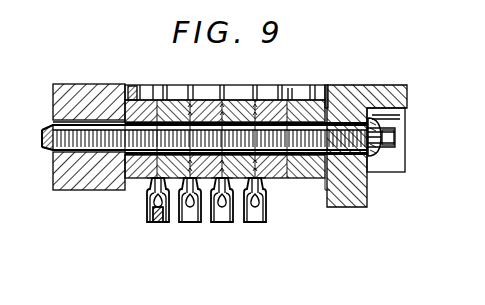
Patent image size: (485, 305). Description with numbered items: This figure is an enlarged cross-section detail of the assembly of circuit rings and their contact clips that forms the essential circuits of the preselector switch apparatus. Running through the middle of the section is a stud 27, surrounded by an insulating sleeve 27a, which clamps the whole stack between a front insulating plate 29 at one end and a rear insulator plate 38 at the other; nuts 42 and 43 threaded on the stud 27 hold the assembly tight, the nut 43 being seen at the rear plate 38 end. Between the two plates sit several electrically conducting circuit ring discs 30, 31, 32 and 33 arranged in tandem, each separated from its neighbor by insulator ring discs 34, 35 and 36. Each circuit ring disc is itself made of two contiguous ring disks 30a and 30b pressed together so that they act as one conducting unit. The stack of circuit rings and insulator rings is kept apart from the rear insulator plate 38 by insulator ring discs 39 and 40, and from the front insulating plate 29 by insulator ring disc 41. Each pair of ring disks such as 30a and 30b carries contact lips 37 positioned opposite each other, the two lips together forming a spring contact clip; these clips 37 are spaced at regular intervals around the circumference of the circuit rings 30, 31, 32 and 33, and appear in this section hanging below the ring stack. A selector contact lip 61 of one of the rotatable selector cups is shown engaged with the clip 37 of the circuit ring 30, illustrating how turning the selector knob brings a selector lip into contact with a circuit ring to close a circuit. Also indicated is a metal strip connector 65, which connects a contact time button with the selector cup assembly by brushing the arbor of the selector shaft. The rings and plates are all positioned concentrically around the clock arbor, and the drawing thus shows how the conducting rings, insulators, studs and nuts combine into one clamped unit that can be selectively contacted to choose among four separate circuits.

The stud 27 is at (44, 135).
The insulating sleeve 27a is at (288, 87).
The front insulating plate 29 is at (63, 192).
The circuit ring disc 30 is at (167, 224).
The contiguous ring disk 30a is at (142, 100).
The contiguous ring disk 30b is at (176, 85).
The circuit ring disc 31 is at (200, 224).
The circuit ring disc 32 is at (234, 224).
The circuit ring disc 33 is at (268, 224).
The insulator ring disc 34 is at (181, 86).
The insulator ring disc 35 is at (212, 87).
The insulator ring disc 36 is at (240, 87).
The contact lip 37 is at (266, 201).
The rear insulator plate 38 is at (372, 190).
The insulator ring disc 39 is at (279, 86).
The insulator ring disc 40 is at (345, 86).
The insulator ring disc 41 is at (124, 220).
The nut 42 is at (135, 84).
The nut 43 is at (388, 123).
The selector contact lip 61 is at (158, 224).
The metal strip connector 65 is at (319, 190).